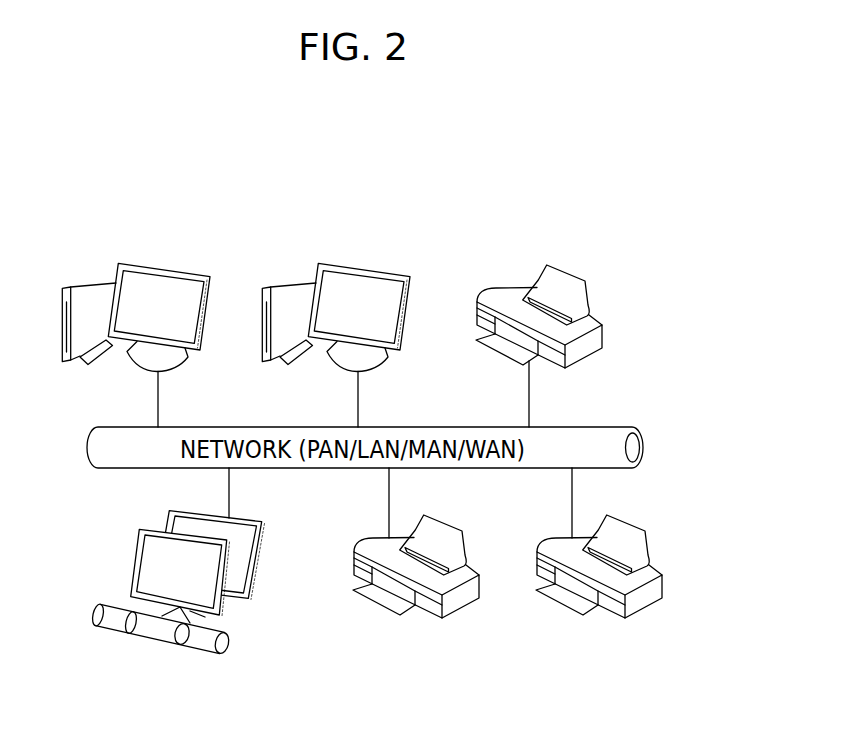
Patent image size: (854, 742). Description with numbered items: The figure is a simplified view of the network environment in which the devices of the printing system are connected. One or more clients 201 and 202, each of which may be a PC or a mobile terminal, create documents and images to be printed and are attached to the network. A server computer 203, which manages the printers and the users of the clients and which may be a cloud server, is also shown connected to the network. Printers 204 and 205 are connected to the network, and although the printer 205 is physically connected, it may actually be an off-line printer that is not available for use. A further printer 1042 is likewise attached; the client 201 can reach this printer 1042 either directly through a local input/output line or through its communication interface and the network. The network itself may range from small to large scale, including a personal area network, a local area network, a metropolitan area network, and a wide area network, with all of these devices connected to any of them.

The client 201 is at (165, 265).
The client 202 is at (365, 265).
The server computer 203 is at (203, 650).
The printer 204 is at (416, 575).
The printer 205 is at (568, 272).
The printer 1042 is at (605, 575).